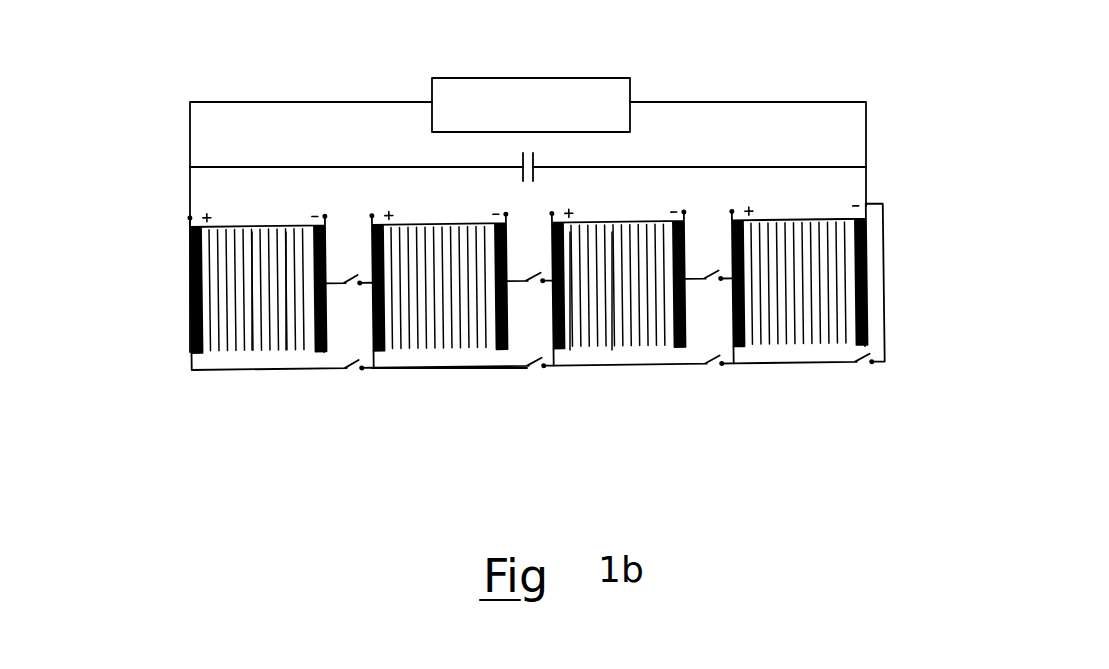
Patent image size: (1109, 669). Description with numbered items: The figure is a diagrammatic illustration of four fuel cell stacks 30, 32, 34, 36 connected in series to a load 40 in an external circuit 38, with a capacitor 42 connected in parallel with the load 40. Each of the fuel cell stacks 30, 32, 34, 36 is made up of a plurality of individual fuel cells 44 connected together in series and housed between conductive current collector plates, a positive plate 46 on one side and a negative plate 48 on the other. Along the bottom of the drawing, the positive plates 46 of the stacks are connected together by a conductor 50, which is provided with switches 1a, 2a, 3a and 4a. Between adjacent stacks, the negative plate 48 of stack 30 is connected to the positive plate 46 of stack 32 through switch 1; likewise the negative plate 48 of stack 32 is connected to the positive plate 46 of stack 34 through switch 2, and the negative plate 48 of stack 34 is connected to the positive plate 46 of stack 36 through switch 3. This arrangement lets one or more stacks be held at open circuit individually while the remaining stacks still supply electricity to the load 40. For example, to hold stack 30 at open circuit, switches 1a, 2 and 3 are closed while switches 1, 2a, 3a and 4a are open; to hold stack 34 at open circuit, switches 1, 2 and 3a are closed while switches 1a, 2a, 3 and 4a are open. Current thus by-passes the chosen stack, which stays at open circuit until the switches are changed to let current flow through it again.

The fuel cell stack 30 is at (226, 395).
The fuel cell stack 32 is at (438, 392).
The fuel cell stack 34 is at (640, 388).
The fuel cell stack 36 is at (805, 388).
The charging circuit 38 is at (178, 190).
The load 40 is at (462, 92).
The capacitor 42 is at (536, 153).
The individual fuel cells 44 is at (288, 354).
The positive current collector plate 46 is at (190, 256).
The negative current collector plate 48 is at (327, 230).
The conductor 50 is at (473, 369).
The switch 1 is at (349, 271).
The switch 2 is at (530, 269).
The switch 3 is at (709, 266).
The switch 1a is at (352, 390).
The switch 2a is at (535, 388).
The switch 3a is at (715, 384).
The switch 4a is at (867, 382).